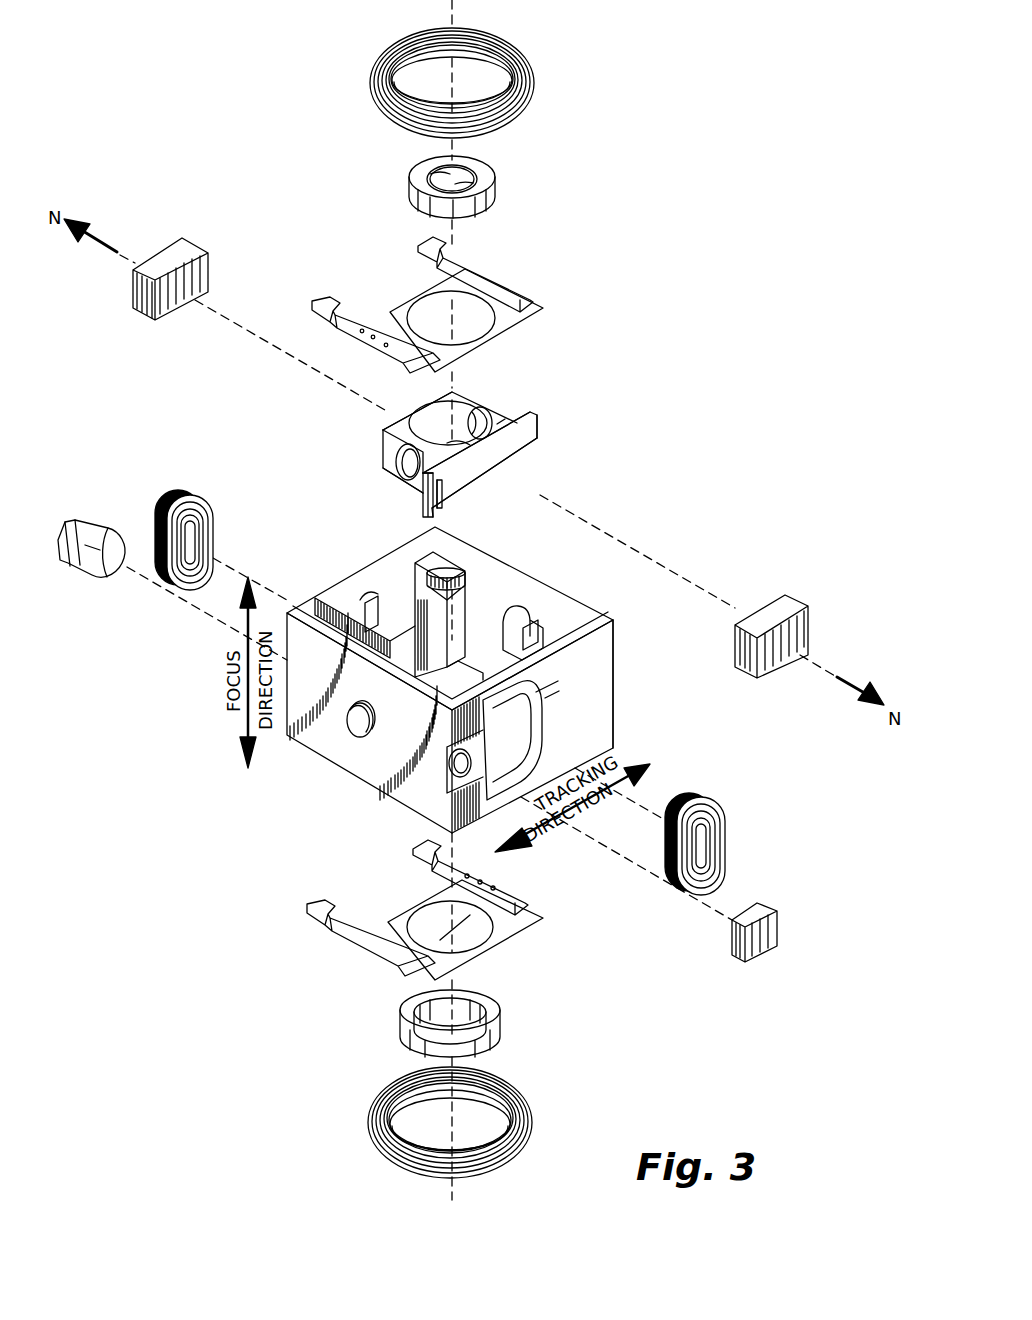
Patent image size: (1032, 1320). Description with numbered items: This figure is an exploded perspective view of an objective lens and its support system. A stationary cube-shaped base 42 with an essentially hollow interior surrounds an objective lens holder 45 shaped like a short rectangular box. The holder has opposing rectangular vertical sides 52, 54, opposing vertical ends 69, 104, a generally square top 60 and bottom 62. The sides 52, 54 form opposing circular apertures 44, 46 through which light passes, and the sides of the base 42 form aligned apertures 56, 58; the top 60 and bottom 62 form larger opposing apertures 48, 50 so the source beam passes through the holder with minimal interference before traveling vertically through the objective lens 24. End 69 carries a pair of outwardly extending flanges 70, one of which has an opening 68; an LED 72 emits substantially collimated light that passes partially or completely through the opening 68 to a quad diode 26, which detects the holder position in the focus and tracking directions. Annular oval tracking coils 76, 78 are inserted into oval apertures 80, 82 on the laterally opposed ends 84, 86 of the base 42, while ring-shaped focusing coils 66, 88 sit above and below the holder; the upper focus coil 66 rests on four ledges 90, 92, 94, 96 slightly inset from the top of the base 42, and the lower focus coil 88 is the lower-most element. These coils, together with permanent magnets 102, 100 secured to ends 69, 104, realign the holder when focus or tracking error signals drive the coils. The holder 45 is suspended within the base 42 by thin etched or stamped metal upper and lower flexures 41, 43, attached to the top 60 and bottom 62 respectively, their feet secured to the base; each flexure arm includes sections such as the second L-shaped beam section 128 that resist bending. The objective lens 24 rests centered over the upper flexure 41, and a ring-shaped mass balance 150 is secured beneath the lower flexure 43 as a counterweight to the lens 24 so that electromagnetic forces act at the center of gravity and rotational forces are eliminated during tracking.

The objective lens 24 is at (490, 178).
The quad diode 26 is at (735, 945).
The upper flexure 41 is at (540, 301).
The base 42 is at (470, 680).
The lower flexure 43 is at (555, 921).
The circular aperture 44 is at (382, 472).
The objective lens holder 45 is at (472, 449).
The circular aperture 46 is at (484, 410).
The aperture 48 is at (440, 410).
The aperture 50 is at (405, 484).
The vertical side 52 is at (385, 450).
The vertical side 54 is at (505, 419).
The aperture 56 is at (356, 736).
The aperture 58 is at (510, 608).
The top 60 is at (476, 442).
The bottom 62 is at (483, 490).
The upper focus coil 66 is at (512, 52).
The opening 68 is at (458, 507).
The vertical end 69 is at (527, 440).
The flanges 70 is at (545, 430).
The LED 72 is at (80, 528).
The tracking coil 76 is at (190, 495).
The tracking coil 78 is at (697, 790).
The oval aperture 80 is at (350, 596).
The oval aperture 82 is at (500, 720).
The lateral end 84 is at (375, 565).
The lateral end 86 is at (612, 698).
The lower focus coil 88 is at (530, 1098).
The ledge 90 is at (440, 566).
The ledge 92 is at (536, 628).
The ledge 94 is at (470, 668).
The ledge 96 is at (375, 615).
The permanent magnet 100 is at (183, 241).
The permanent magnet 102 is at (790, 600).
The vertical end 104 is at (378, 430).
The second L-shaped beam section 128 is at (467, 930).
The mass balance 150 is at (495, 1030).